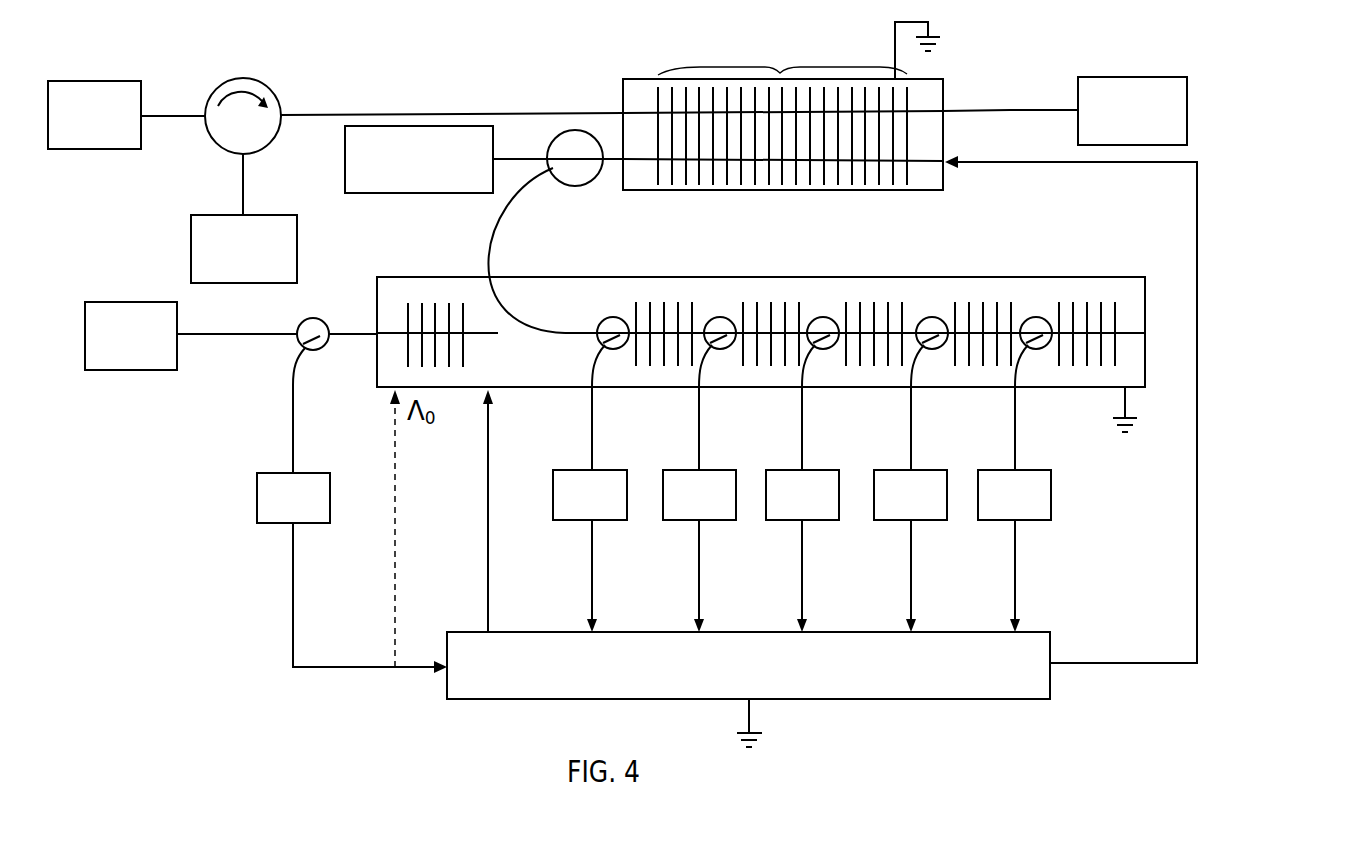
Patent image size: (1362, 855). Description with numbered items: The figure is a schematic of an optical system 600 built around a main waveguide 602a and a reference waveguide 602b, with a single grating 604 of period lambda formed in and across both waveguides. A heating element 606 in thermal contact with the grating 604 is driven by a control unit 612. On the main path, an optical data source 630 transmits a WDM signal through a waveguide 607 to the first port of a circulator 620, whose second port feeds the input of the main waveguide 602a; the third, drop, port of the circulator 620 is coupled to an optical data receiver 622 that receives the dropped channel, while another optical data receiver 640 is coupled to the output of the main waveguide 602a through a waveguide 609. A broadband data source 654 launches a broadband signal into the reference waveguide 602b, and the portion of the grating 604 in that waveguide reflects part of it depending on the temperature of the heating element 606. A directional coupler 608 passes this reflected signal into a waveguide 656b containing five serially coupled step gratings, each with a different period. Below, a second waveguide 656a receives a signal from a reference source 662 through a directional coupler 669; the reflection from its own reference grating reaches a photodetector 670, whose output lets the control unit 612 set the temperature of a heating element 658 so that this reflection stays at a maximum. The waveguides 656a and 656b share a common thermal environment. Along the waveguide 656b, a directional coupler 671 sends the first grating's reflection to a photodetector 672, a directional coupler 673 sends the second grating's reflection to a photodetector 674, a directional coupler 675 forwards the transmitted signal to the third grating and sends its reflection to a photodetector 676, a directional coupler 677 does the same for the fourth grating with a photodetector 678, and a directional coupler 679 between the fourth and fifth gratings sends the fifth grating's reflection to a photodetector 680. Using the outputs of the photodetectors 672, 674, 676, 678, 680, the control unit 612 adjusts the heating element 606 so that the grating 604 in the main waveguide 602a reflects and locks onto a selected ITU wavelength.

The optical system 600 is at (1248, 42).
The main waveguide 602a is at (447, 112).
The reference waveguide 602b is at (615, 155).
The grating 604 is at (781, 72).
The heating element 606 is at (945, 95).
The waveguide 607 is at (157, 110).
The directional coupler 608 is at (566, 186).
The waveguide 609 is at (1035, 110).
The control unit 612 is at (920, 700).
The circulator 620 is at (251, 79).
The optical data receiver 622 is at (256, 214).
The optical data source 630 is at (124, 80).
The optical data receiver 640 is at (1167, 77).
The broadband data source 654 is at (433, 194).
The second waveguide 656a is at (228, 333).
The waveguide 656b is at (560, 347).
The heating element 658 is at (377, 348).
The reference source 662 is at (130, 301).
The directional coupler 669 is at (312, 318).
The photodetector 670 is at (308, 472).
The directional coupler 671 is at (606, 320).
The photodetector 672 is at (607, 470).
The directional coupler 673 is at (713, 320).
The photodetector 674 is at (714, 470).
The directional coupler 675 is at (816, 320).
The photodetector 676 is at (817, 470).
The directional coupler 677 is at (925, 320).
The photodetector 678 is at (926, 470).
The directional coupler 679 is at (1029, 320).
The photodetector 680 is at (1030, 470).